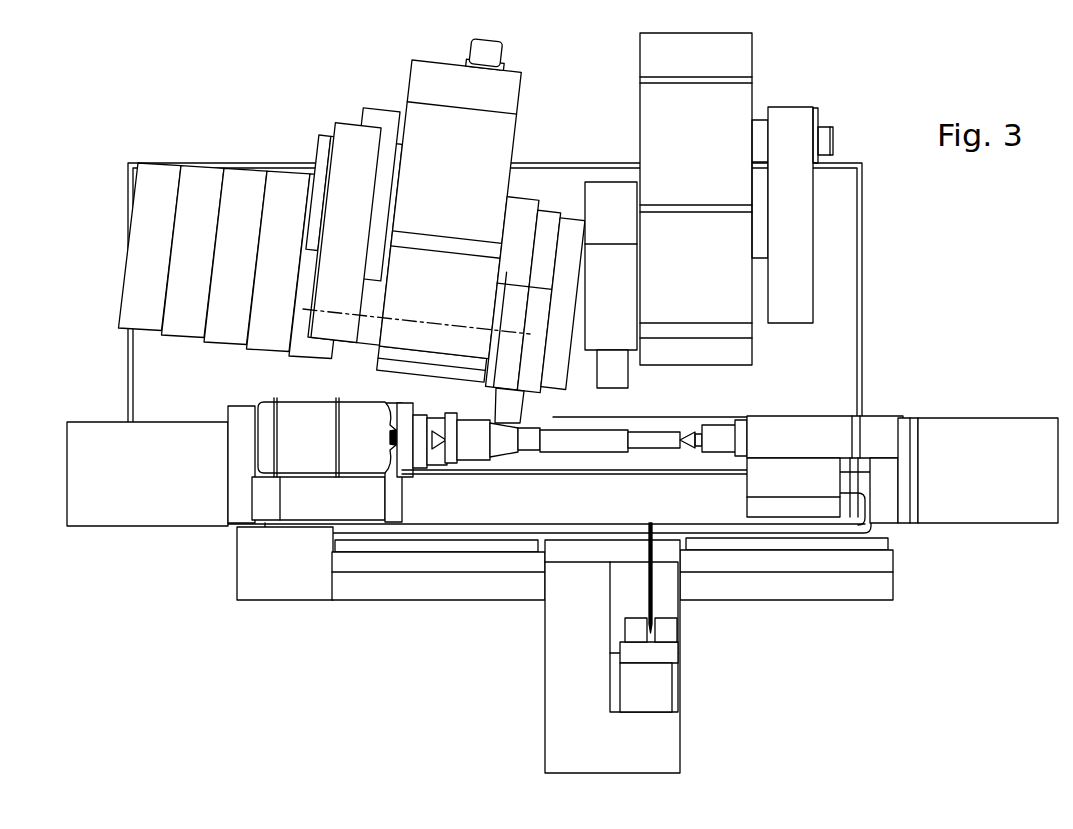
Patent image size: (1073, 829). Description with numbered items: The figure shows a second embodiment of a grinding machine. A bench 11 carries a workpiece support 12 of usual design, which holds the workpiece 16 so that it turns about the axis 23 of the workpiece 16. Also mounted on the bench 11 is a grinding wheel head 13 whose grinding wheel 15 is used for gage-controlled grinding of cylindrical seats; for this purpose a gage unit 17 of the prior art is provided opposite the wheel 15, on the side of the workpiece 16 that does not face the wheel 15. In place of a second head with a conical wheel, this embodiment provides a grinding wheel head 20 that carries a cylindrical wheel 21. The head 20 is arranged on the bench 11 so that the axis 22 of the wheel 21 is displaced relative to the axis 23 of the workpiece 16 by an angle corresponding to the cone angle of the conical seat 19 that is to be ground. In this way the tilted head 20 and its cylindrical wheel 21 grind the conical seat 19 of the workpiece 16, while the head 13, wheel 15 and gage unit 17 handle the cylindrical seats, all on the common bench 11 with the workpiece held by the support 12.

The bench 11 is at (852, 295).
The workpiece support 12 is at (988, 428).
The grinding wheel head 13 is at (707, 150).
The grinding wheel 15 is at (628, 382).
The workpiece 16 is at (662, 437).
The gage unit 17 is at (658, 692).
The conical seat 19 is at (503, 448).
The grinding wheel head 20 is at (461, 178).
The cylindrical wheel 21 is at (522, 406).
The axis of the wheel 22 is at (457, 320).
The axis of the workpiece 23 is at (607, 438).